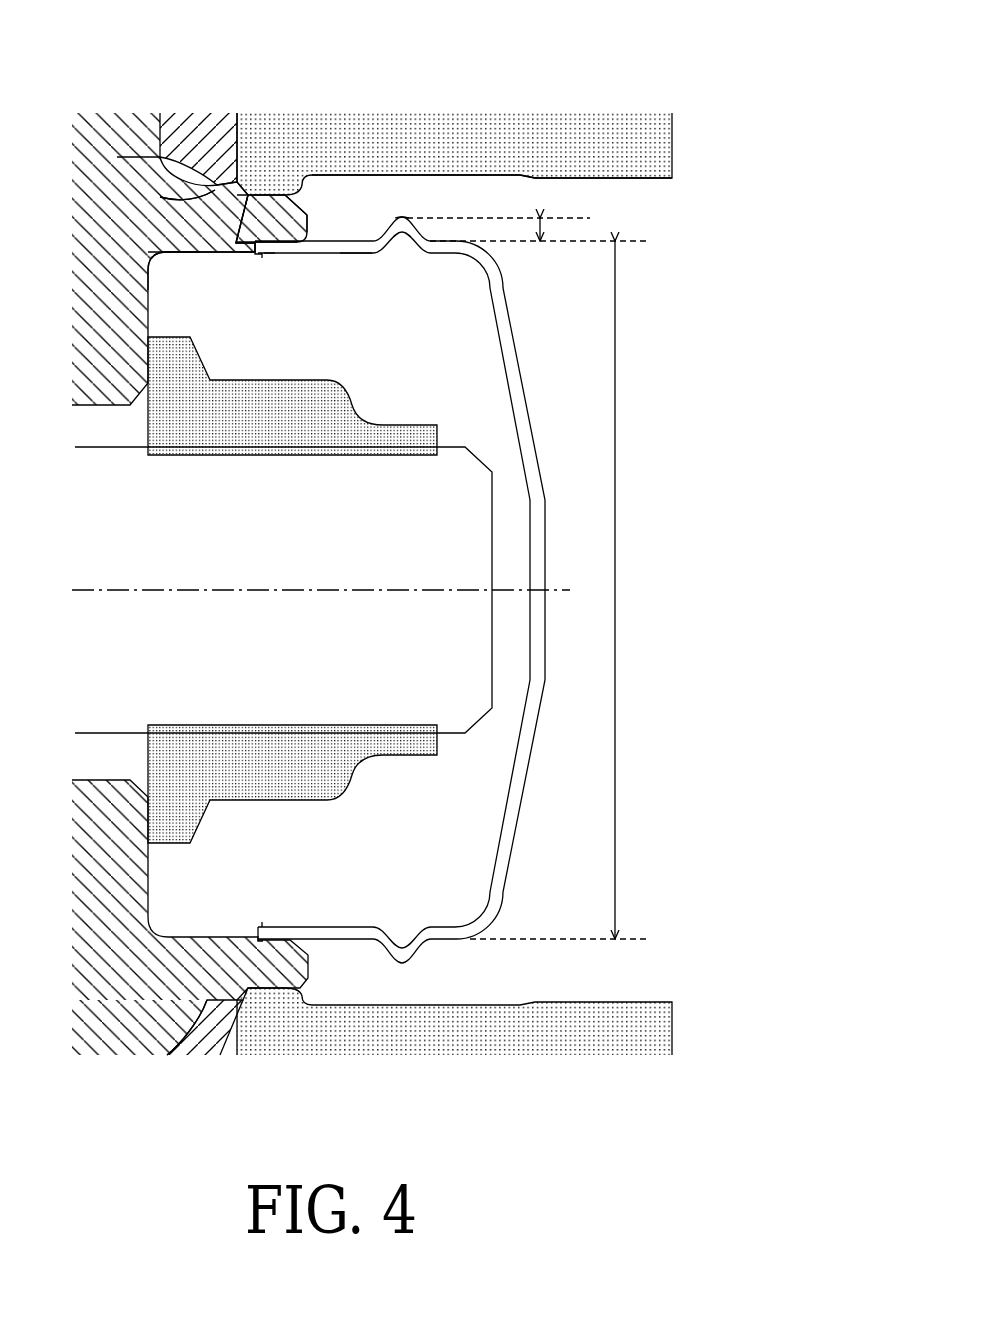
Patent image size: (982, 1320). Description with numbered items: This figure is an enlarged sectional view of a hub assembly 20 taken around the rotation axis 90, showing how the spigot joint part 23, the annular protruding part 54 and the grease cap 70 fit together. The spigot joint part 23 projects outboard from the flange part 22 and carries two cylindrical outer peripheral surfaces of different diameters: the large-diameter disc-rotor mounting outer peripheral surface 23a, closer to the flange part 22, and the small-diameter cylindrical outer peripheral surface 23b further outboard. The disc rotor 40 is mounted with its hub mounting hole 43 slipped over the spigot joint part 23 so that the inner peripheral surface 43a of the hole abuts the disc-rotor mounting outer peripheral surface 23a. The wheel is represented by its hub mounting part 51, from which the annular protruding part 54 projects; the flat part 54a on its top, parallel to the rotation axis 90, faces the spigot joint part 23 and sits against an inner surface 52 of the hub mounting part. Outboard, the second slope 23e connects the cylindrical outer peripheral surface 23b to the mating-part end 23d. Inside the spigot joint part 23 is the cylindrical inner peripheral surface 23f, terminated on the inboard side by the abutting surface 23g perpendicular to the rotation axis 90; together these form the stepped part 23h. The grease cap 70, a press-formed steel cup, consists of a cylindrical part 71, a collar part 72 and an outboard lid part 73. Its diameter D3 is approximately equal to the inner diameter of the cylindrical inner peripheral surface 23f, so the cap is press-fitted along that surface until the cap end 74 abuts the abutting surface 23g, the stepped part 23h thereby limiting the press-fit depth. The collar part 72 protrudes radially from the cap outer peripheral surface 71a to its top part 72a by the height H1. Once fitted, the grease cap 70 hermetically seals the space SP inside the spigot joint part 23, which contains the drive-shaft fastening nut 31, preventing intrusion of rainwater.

The sealing device 20 is at (82, 86).
The flange part 22 is at (113, 113).
The spigot joint part 23 is at (197, 223).
The disc-rotor mounting outer peripheral surface 23a is at (117, 157).
The cylindrical outer peripheral surface 23b is at (240, 254).
The mating-part end 23d is at (309, 222).
The second slope 23e is at (306, 198).
The cylindrical inner peripheral surface 23f is at (270, 255).
The abutting surface 23g is at (262, 256).
The stepped part 23h is at (247, 200).
The drive-shaft fastening nut 31 is at (386, 426).
The disc rotor 40 is at (172, 128).
The hub mounting hole 43 is at (180, 271).
The inner peripheral surface of the hub mounting hole 43a is at (160, 197).
The hub mounting part 51 is at (403, 126).
The inner surface of stationary member 52 is at (492, 191).
The annular protruding part 54 is at (280, 178).
The flat part 54a is at (287, 243).
The grease cap 70 is at (420, 581).
The cylindrical part 71 is at (340, 254).
The cap outer peripheral surface 71a is at (385, 254).
The collar part 72 is at (402, 254).
The top part of the collar part 72a is at (405, 220).
The lid part 73 is at (502, 290).
The cap end 74 is at (256, 254).
The rotation axis 90 is at (130, 592).
The height of the collar part H1 is at (498, 215).
The diameter of the grease cap D3 is at (540, 590).
The space SP is at (427, 351).